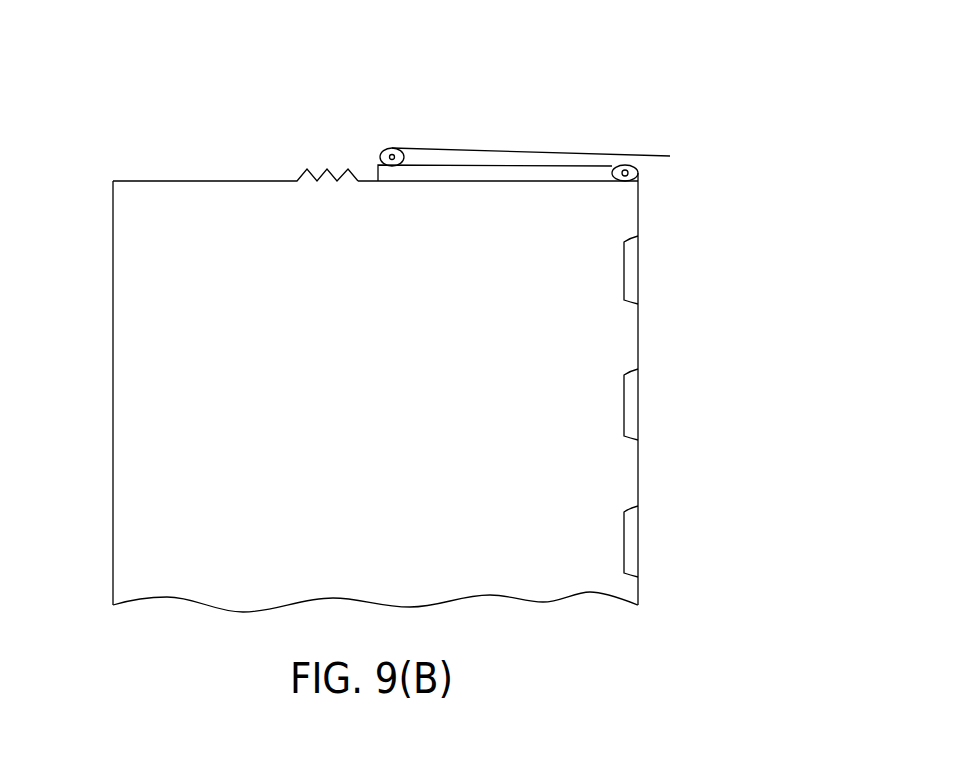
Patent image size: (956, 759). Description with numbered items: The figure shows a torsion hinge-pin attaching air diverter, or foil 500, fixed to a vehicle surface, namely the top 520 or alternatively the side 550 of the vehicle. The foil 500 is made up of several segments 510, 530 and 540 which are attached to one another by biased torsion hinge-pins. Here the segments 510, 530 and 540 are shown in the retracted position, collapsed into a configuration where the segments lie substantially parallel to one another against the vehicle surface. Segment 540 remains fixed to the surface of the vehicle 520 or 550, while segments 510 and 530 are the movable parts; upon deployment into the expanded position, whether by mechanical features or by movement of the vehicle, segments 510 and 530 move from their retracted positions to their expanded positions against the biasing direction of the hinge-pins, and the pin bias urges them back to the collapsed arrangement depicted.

The air diverter or foil 500 is at (687, 120).
The segment 510 is at (577, 150).
The top of the vehicle 520 is at (148, 179).
The segment 530 is at (575, 165).
The segment 540 is at (535, 182).
The side of the vehicle 550 is at (112, 308).